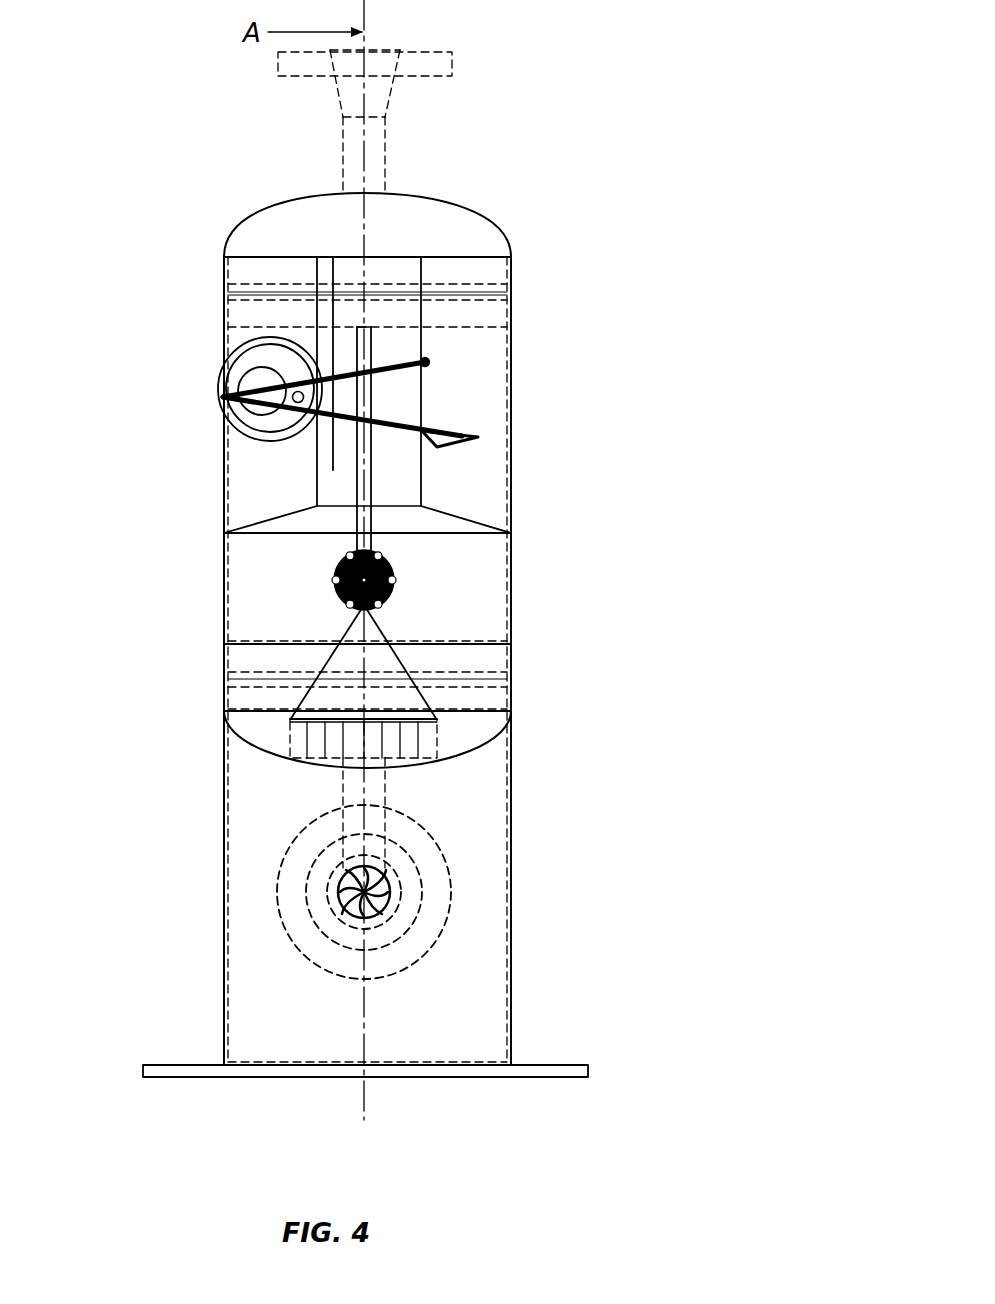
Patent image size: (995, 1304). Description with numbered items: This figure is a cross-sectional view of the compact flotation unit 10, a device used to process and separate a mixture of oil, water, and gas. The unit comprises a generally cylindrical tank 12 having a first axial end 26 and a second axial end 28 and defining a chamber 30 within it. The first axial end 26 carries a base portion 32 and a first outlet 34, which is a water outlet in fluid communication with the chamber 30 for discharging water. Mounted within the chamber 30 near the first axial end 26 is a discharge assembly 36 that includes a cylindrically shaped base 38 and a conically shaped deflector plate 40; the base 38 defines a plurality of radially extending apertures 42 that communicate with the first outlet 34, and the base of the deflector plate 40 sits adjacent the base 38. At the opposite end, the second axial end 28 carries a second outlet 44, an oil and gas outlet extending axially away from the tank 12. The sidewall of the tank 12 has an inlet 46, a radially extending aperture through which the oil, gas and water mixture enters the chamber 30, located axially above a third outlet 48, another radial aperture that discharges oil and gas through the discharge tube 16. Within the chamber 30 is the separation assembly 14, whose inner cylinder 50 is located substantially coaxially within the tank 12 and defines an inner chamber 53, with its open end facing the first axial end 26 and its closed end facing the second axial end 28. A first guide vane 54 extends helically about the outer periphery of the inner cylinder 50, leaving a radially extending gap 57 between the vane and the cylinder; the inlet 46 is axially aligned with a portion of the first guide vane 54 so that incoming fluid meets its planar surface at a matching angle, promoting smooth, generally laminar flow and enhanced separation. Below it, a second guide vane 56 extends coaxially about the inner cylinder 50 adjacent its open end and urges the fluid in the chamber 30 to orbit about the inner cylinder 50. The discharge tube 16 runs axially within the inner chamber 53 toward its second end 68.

The compact flotation unit 10 is at (520, 90).
The tank 12 is at (224, 492).
The separation assembly 14 is at (442, 545).
The discharge tube 16 is at (352, 494).
The first axial end 26 is at (263, 755).
The second axial end 28 is at (278, 200).
The chamber 30 is at (482, 573).
The base portion 32 is at (511, 953).
The first outlet 34 is at (383, 770).
The discharge assembly 36 is at (332, 633).
The base 38 is at (437, 743).
The deflector plate 40 is at (387, 632).
The radially extending apertures 42 is at (333, 760).
The second outlet 44 is at (386, 193).
The inlet 46 is at (238, 362).
The third outlet 48 is at (336, 588).
The inner cylinder 50 is at (424, 400).
The inner chamber 53 is at (377, 468).
The first guide vane 54 is at (463, 429).
The second guide vane 56 is at (468, 520).
The radially extending gap 57 is at (296, 392).
The second end 68 is at (421, 347).